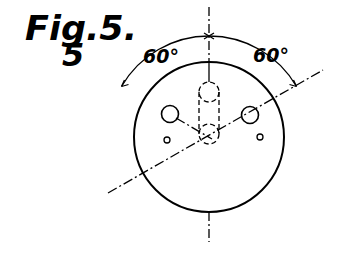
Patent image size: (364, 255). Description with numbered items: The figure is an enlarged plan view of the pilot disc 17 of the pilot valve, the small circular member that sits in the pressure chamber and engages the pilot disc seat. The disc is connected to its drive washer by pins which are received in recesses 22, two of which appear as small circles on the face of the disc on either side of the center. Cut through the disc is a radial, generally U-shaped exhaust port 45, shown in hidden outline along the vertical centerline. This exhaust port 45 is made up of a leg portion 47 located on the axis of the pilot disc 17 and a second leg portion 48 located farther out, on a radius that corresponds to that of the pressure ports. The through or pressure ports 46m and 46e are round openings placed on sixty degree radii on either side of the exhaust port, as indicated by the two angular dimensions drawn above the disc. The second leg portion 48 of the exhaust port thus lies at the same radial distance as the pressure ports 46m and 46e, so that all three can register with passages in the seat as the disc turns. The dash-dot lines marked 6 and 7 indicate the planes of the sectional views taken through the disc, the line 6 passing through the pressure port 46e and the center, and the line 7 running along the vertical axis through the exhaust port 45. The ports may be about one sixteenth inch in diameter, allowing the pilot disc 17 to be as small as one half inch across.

The pilot disc 17 is at (267, 178).
The recesses 22 is at (164, 140).
The exhaust port 45 is at (218, 116).
The pressure port 46m is at (168, 114).
The pressure port 46e is at (258, 108).
The leg portion 47 is at (212, 146).
The second leg portion 48 is at (214, 86).
The section line 6- 6 is at (108, 193).
The section line 7- 7 is at (209, 7).